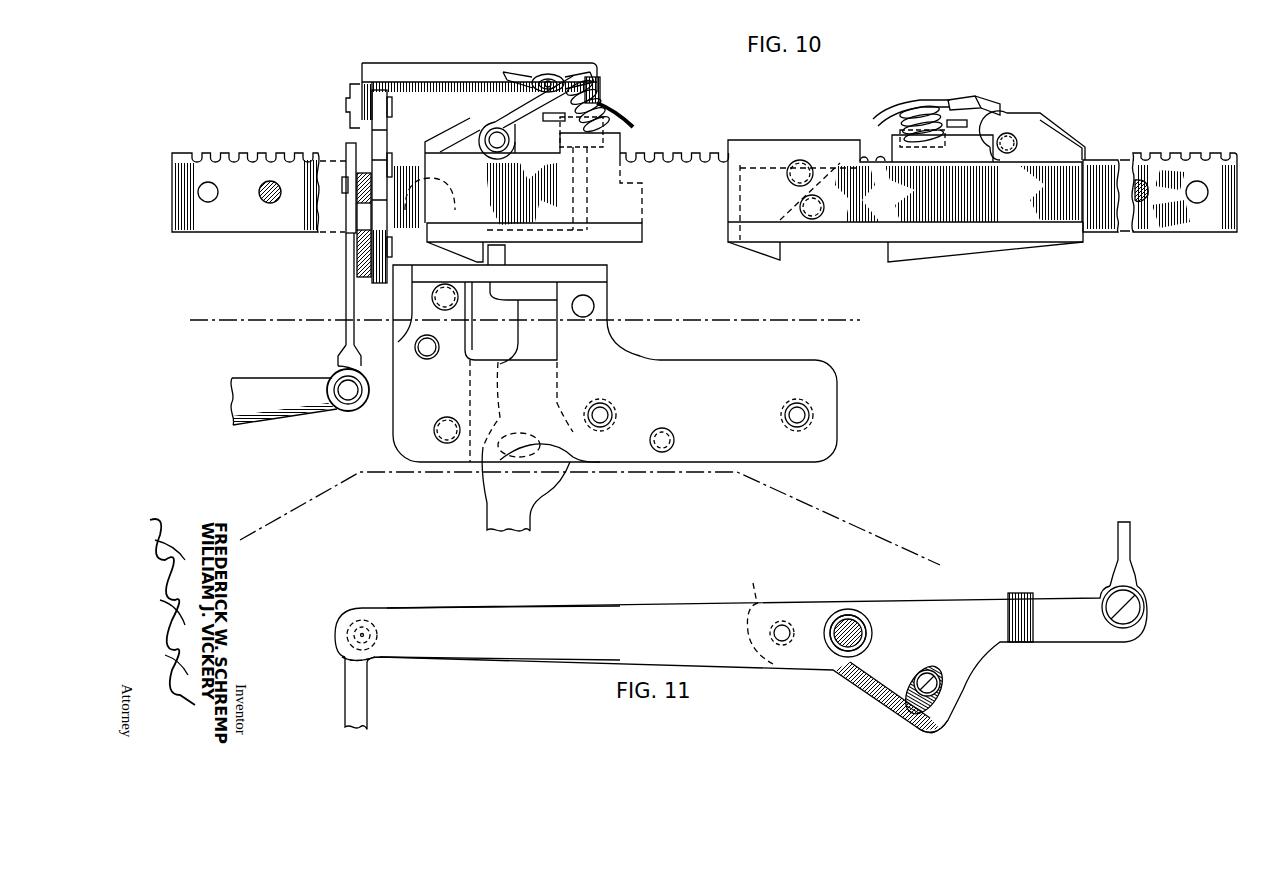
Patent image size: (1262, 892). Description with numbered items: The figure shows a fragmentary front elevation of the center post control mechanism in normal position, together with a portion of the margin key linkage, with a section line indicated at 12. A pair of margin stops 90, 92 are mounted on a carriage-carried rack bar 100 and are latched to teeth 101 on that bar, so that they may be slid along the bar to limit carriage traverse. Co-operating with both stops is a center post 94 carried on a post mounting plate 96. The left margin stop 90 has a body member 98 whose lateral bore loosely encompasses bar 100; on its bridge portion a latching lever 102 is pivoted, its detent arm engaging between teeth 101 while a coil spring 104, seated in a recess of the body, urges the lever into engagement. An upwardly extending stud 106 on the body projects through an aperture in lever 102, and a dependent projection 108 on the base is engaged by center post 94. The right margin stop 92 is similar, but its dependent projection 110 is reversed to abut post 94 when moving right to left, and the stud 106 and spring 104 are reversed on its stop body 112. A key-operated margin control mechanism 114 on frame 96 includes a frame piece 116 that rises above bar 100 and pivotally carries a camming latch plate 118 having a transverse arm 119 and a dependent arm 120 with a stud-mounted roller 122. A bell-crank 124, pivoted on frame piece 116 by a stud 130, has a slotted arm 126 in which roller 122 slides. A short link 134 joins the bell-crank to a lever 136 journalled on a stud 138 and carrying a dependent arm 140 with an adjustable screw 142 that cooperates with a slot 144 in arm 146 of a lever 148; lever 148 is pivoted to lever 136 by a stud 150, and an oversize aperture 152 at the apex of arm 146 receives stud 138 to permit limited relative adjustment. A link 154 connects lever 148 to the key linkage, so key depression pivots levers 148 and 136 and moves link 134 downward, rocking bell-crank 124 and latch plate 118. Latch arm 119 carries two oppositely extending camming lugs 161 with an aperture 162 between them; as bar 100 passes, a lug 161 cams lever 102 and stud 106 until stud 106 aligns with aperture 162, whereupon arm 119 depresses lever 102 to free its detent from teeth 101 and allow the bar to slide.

In FIG. 10, the section line 12 is at (278, 80).
In FIG. 10, the margin stop 90 is at (626, 132).
In FIG. 10, the margin stop 92 is at (875, 132).
In FIG. 10, the center post 94 is at (505, 257).
In FIG. 10, the post mounting plate 96 is at (642, 364).
In FIG. 10, the body member 98 is at (451, 141).
In FIG. 10, the rack bar 100 is at (1237, 152).
In FIG. 10, the teeth 101 is at (1176, 152).
In FIG. 10, the latching lever 102 is at (463, 110).
In FIG. 10, the coil spring 104 is at (590, 117).
In FIG. 10, the stud 106 is at (555, 116).
In FIG. 10, the dependent projection 108 is at (450, 246).
In FIG. 10, the dependent projection 110 is at (893, 254).
In FIG. 10, the stop body 112 is at (1055, 142).
In FIG. 10, the margin control mechanism 114 is at (350, 66).
In FIG. 10, the frame piece 116 is at (400, 298).
In FIG. 10, the camming latch plate 118 is at (533, 67).
In FIG. 10, the transversely extending arm 119 is at (554, 74).
In FIG. 10, the dependent arm 120 is at (360, 118).
In FIG. 10, the roller 122 is at (340, 178).
In FIG. 10, the bell-crank 124 is at (340, 154).
In FIG. 10, the arm 126 is at (361, 166).
In FIG. 10, the stud 130 is at (357, 240).
In FIG. 10, the short link 134 is at (347, 331).
In FIG. 11, the short link 134 is at (1127, 538).
In FIG. 10, the lever 136 is at (267, 388).
In FIG. 11, the lever 136 is at (990, 583).
In FIG. 11, the stud 138 is at (950, 667).
In FIG. 11, the arm 140 is at (915, 727).
In FIG. 11, the adjustable screw 142 is at (942, 683).
In FIG. 11, the slot 144 is at (940, 712).
In FIG. 11, the arm 146 is at (873, 685).
In FIG. 11, the lever 148 is at (688, 612).
In FIG. 11, the stud 150 is at (786, 624).
In FIG. 11, the aperture 152 is at (851, 611).
In FIG. 11, the link 154 is at (362, 713).
In FIG. 10, the camming lugs 161 is at (511, 67).
In FIG. 10, the aperture 162 is at (566, 77).